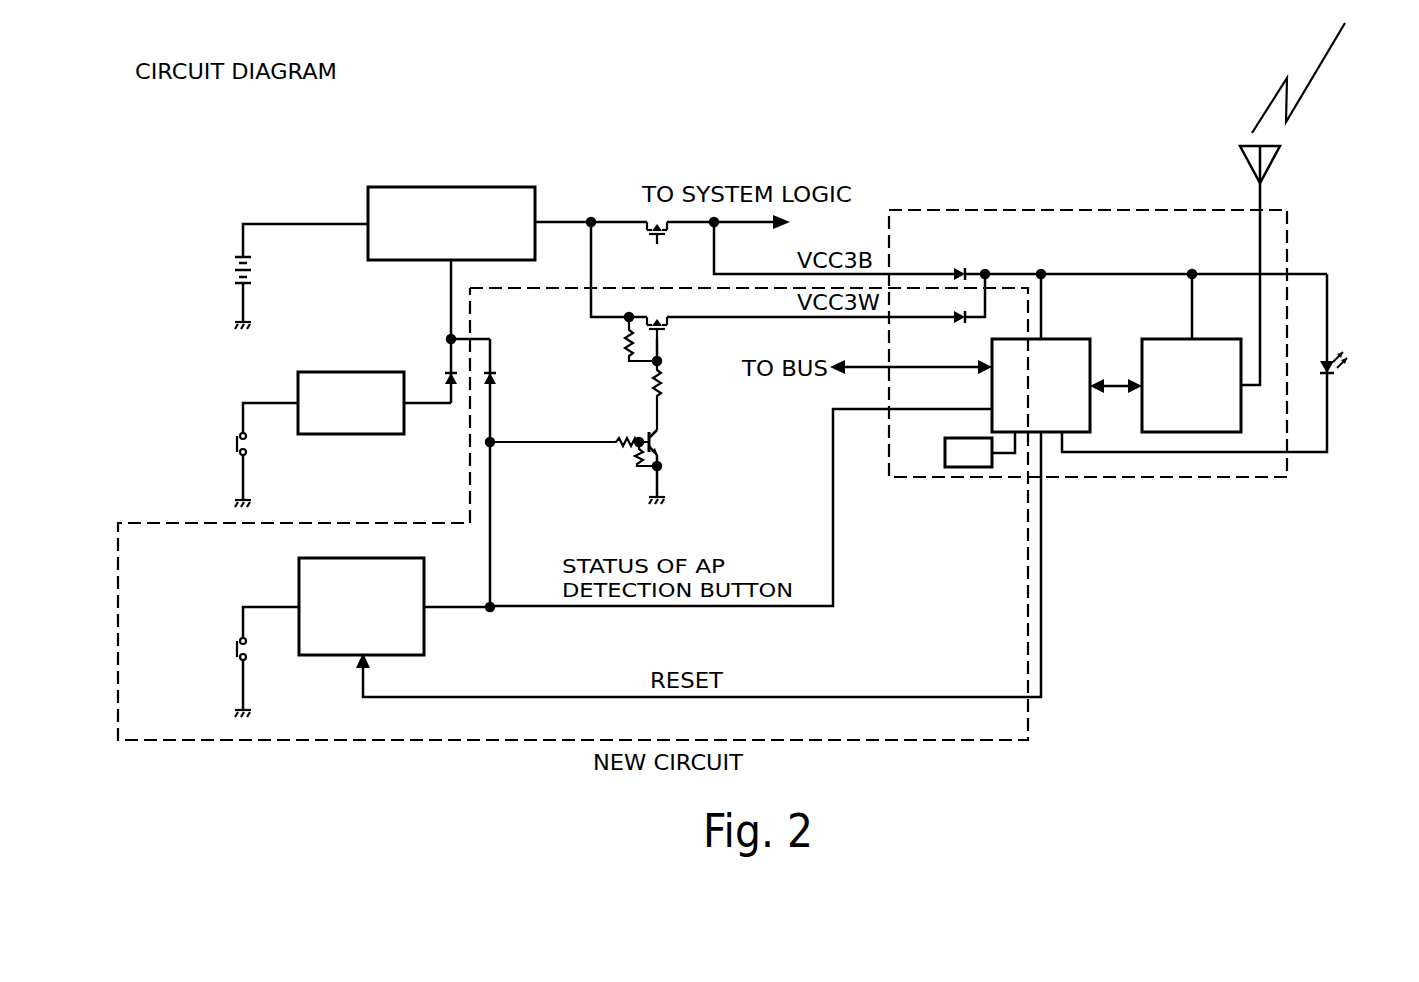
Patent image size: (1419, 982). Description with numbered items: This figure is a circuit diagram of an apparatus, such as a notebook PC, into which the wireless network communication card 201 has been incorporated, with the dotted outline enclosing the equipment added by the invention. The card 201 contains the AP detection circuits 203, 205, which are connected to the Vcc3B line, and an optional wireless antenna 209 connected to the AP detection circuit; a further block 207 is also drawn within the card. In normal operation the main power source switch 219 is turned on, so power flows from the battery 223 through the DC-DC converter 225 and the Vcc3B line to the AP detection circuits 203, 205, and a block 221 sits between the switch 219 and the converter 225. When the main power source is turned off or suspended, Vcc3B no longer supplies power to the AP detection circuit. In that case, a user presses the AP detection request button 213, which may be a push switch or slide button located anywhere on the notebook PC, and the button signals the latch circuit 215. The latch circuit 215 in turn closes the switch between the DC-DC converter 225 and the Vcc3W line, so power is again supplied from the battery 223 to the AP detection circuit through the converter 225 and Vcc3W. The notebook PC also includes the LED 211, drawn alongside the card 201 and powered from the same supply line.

The wireless network communication card 201 is at (988, 209).
The AP detection circuit 203 is at (1075, 339).
The AP detection circuit 205 is at (1222, 339).
The pull-down resistor / component 207 is at (952, 438).
The wireless antenna 209 is at (1275, 155).
The LED 211 is at (1337, 358).
The AP detection request button 213 is at (234, 647).
The latch circuit 215 is at (299, 570).
The main power source switch 219 is at (234, 445).
The power controller 221 is at (350, 372).
The battery 223 is at (236, 270).
The DC-DC converter 225 is at (451, 187).